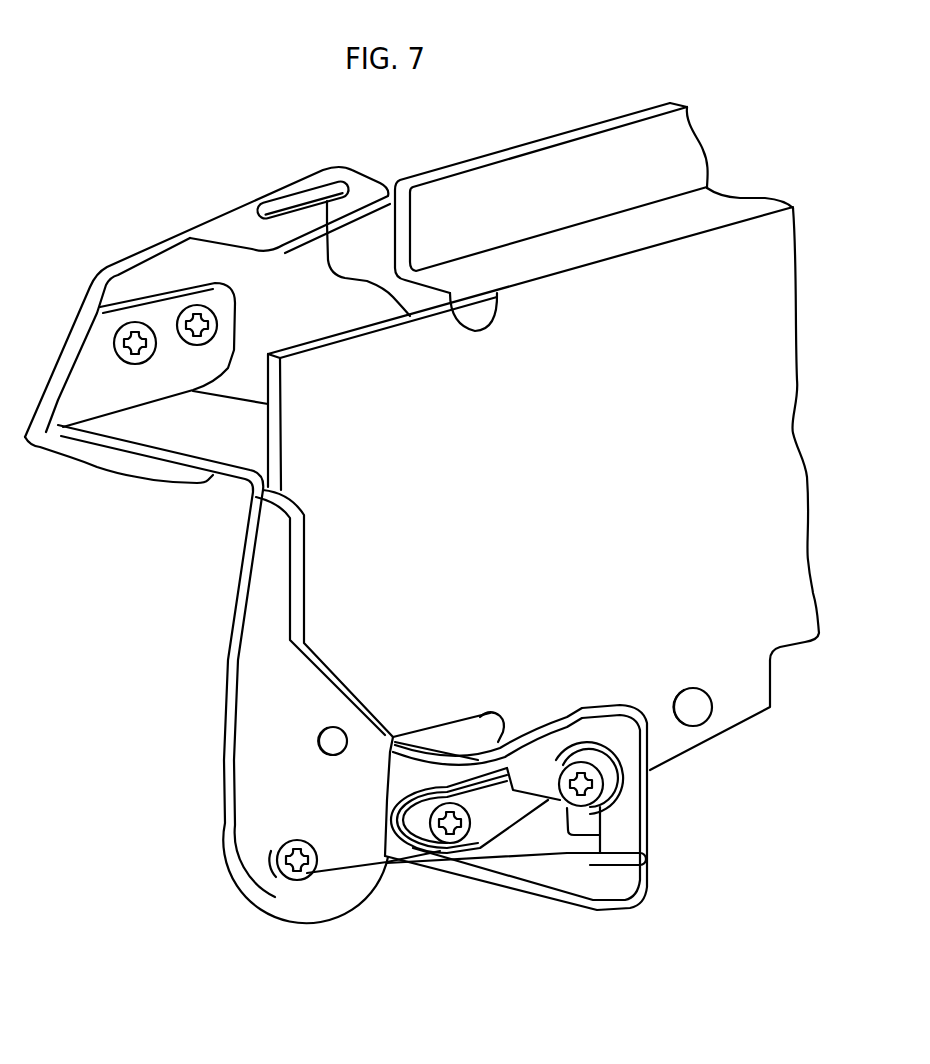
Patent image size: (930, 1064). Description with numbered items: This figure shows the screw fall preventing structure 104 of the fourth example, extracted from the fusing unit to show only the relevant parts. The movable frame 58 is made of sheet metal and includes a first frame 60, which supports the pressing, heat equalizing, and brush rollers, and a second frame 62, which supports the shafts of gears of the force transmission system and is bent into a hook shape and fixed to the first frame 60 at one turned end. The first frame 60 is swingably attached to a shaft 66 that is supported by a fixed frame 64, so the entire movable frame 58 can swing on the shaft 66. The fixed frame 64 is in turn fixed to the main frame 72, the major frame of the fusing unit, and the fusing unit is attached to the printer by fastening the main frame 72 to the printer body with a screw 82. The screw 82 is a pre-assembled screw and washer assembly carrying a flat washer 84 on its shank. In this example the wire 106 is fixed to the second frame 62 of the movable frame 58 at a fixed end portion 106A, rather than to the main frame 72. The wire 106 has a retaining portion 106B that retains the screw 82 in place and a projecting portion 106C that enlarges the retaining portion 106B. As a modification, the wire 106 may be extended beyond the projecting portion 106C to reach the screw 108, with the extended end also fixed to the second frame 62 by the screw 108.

The movable frame 58 is at (217, 544).
The first frame 60 is at (115, 270).
The second frame 62 is at (115, 420).
The fixed frame 64 is at (744, 191).
The shaft 66 is at (697, 712).
The main frame 72 is at (512, 893).
The screw 82 is at (612, 768).
The washer 84 is at (616, 790).
The screw fall preventing structure 104 is at (464, 880).
The wire 106 is at (508, 877).
The fixed end portion 106A is at (302, 890).
The retaining portion 106B is at (611, 814).
The projecting portion 106C is at (619, 882).
The screw 108 is at (283, 870).